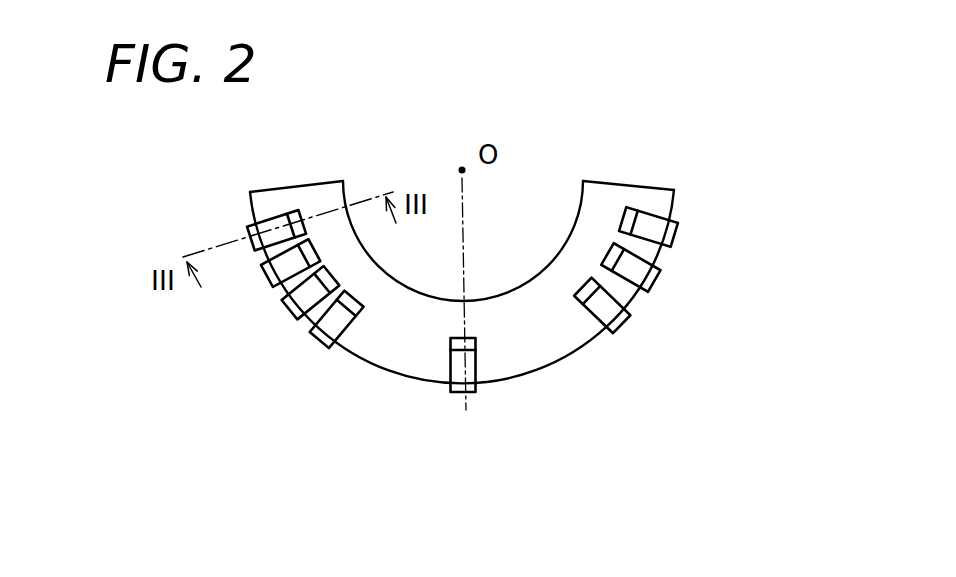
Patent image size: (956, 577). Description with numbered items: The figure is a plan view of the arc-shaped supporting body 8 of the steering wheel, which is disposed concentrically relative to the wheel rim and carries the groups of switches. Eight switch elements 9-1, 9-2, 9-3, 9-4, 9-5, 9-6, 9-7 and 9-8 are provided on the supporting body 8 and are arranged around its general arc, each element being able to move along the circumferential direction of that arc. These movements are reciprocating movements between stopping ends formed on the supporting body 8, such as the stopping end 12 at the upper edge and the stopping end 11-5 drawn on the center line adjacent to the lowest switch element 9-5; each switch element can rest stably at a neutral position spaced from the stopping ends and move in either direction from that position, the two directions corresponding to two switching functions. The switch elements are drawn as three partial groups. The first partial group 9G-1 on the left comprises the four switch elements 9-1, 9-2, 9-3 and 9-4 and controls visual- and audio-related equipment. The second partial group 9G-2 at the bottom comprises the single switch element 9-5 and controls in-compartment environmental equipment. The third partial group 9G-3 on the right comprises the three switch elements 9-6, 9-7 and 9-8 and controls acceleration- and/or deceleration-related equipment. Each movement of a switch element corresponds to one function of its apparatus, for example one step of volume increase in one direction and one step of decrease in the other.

The supporting body 8 is at (534, 230).
The stopping end 12 is at (632, 195).
The center line 11-5 is at (462, 213).
The switch element 9-1 is at (270, 287).
The switch element 9-2 is at (298, 310).
The switch element 9-3 is at (309, 367).
The switch element 9-4 is at (262, 231).
The switch element 9-5 is at (432, 400).
The switch element 9-6 is at (625, 327).
The switch element 9-7 is at (650, 283).
The switch element 9-8 is at (665, 233).
The first partial group 9G-1 is at (212, 313).
The second partial group 9G-2 is at (459, 412).
The third partial group 9G-3 is at (719, 298).